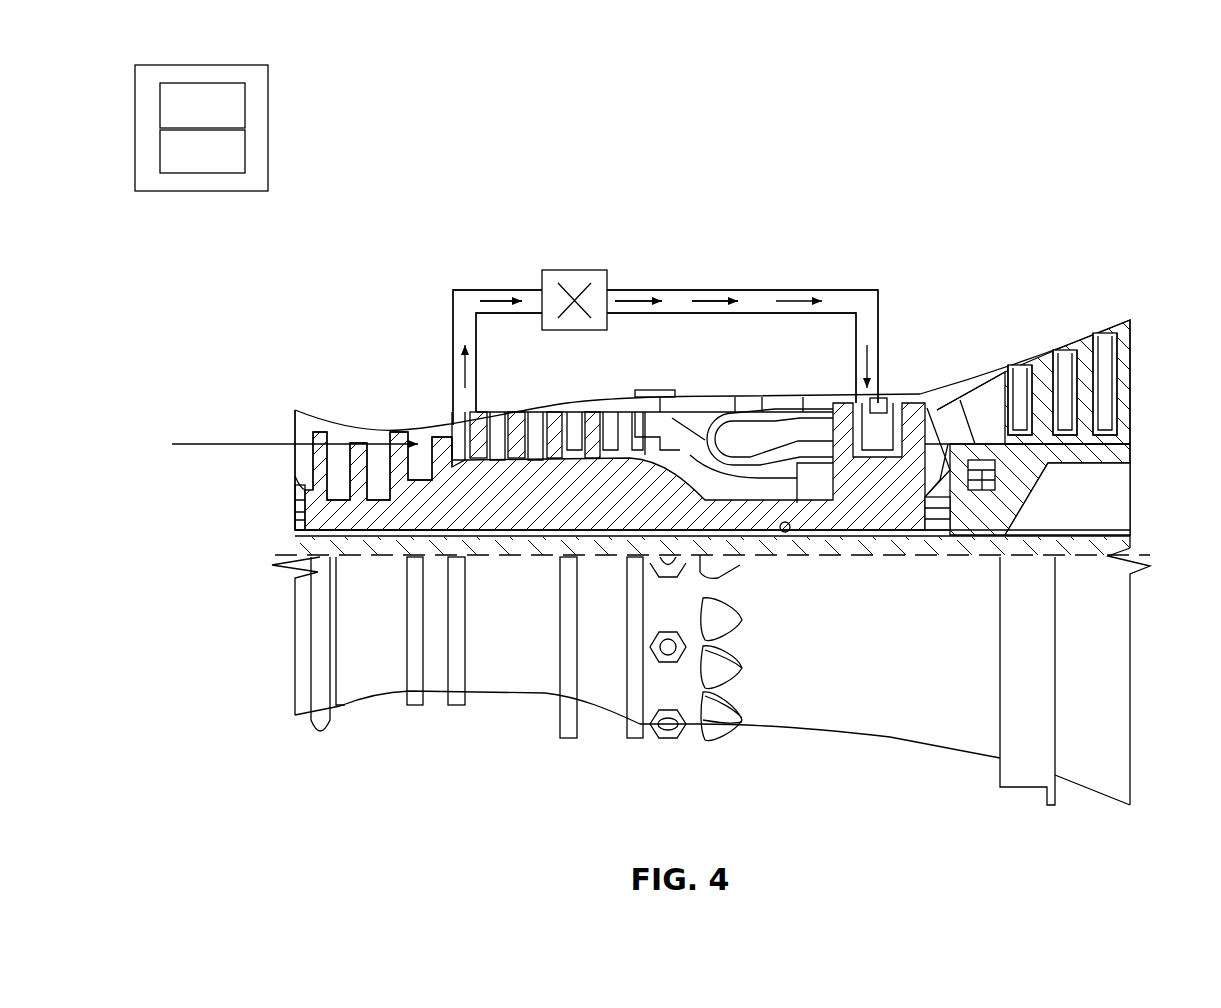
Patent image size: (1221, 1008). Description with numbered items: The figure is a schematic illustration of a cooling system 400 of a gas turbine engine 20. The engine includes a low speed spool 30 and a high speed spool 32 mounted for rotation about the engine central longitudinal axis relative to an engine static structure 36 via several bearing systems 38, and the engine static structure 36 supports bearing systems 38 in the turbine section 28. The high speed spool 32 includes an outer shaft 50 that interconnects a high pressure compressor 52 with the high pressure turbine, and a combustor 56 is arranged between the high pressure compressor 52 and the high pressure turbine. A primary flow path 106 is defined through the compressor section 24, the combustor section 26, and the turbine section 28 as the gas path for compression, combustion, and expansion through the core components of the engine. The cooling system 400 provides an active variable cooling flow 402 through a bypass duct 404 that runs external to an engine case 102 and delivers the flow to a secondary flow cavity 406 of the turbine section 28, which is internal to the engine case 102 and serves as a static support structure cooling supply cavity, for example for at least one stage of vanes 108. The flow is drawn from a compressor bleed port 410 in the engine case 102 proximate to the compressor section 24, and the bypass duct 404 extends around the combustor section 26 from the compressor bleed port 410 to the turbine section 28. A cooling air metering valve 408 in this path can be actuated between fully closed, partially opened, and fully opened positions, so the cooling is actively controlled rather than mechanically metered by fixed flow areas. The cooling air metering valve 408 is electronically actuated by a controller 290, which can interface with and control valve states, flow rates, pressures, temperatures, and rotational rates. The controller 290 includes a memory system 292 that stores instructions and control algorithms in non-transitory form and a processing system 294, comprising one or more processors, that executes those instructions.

The gas turbine engine 20 is at (1103, 232).
The compressor section 24 is at (467, 247).
The combustor section 26 is at (757, 257).
The turbine section 28 is at (990, 275).
The low speed spool 30 is at (553, 562).
The high speed spool 32 is at (628, 480).
The engine static structure 36 is at (610, 745).
The bearing systems 38 is at (985, 470).
The outer shaft 50 is at (790, 530).
The high pressure compressor 52 is at (455, 487).
The combustor 56 is at (735, 430).
The engine case 102 is at (542, 408).
The primary flow path 106 is at (215, 447).
The vanes 108 is at (944, 404).
The controller 290 is at (215, 66).
The memory system 292 is at (202, 105).
The processing system 294 is at (202, 151).
The cooling system 400 is at (595, 122).
The active variable cooling flow 402 is at (812, 300).
The bypass duct 404 is at (655, 290).
The secondary flow cavity 406 is at (882, 437).
The cooling air metering valve 408 is at (565, 270).
The compressor bleed port 410 is at (457, 440).